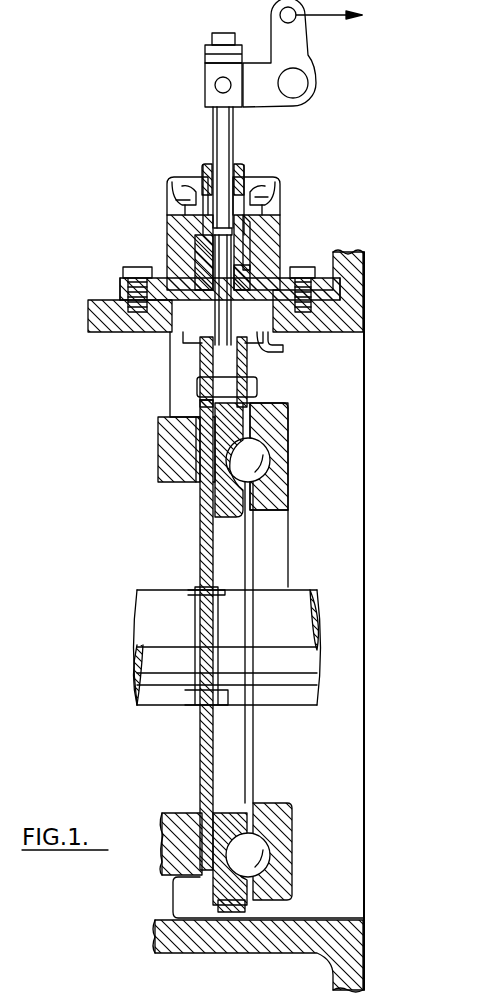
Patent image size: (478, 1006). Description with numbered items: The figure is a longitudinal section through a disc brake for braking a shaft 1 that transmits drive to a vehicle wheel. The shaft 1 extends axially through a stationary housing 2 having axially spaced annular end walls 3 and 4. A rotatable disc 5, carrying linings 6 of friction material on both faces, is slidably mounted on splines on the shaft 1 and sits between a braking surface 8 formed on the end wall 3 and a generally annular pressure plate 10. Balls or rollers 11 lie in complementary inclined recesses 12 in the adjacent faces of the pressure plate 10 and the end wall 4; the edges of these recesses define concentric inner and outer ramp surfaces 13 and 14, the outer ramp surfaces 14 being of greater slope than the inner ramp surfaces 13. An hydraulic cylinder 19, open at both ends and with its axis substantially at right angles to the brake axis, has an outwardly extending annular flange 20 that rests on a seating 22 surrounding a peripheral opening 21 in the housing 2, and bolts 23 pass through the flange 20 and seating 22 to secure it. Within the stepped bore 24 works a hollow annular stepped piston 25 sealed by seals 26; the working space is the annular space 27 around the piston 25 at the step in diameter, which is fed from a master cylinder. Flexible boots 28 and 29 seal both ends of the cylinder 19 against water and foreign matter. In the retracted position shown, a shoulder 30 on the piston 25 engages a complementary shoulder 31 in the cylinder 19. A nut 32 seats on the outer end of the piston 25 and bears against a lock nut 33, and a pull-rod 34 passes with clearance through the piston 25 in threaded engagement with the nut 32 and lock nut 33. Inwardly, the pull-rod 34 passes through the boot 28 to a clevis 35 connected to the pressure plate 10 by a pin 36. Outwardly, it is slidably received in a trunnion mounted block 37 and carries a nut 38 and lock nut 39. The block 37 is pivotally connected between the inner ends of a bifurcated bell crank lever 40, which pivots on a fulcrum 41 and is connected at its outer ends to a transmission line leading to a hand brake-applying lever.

The shaft 1 is at (172, 612).
The stationary housing 2 is at (100, 326).
The end wall 3 is at (160, 428).
The end wall 4 is at (275, 436).
The rotatable disc 5 is at (205, 498).
The linings 6 is at (200, 465).
The braking surface 8 is at (200, 452).
The pressure plate 10 is at (235, 508).
The balls or rollers 11 is at (258, 462).
The inclined recesses 12 is at (270, 482).
The inner ramp surfaces 13 is at (262, 843).
The outer ramp surfaces 14 is at (255, 830).
The hydraulic cylinder 19 is at (165, 236).
The annular flange 20 is at (305, 268).
The peripheral opening 21 is at (197, 287).
The seating 22 is at (126, 292).
The bolts 23 is at (340, 284).
The stepped bore 24 is at (240, 270).
The stepped piston 25 is at (262, 205).
The seals 26 is at (178, 200).
The annular space 27 is at (175, 227).
The flexible boot 28 is at (267, 343).
The flexible boot 29 is at (275, 183).
The shoulder 30 is at (236, 248).
The complementary shoulder 31 is at (250, 222).
The nut 32 is at (242, 178).
The lock nut 33 is at (205, 170).
The pull-rod 34 is at (230, 134).
The clevis 35 is at (250, 370).
The pin 36 is at (208, 388).
The trunnion mounted block 37 is at (206, 90).
The nut 38 is at (207, 60).
The lock nut 39 is at (228, 50).
The bell crank lever 40 is at (305, 45).
The fulcrum 41 is at (297, 88).